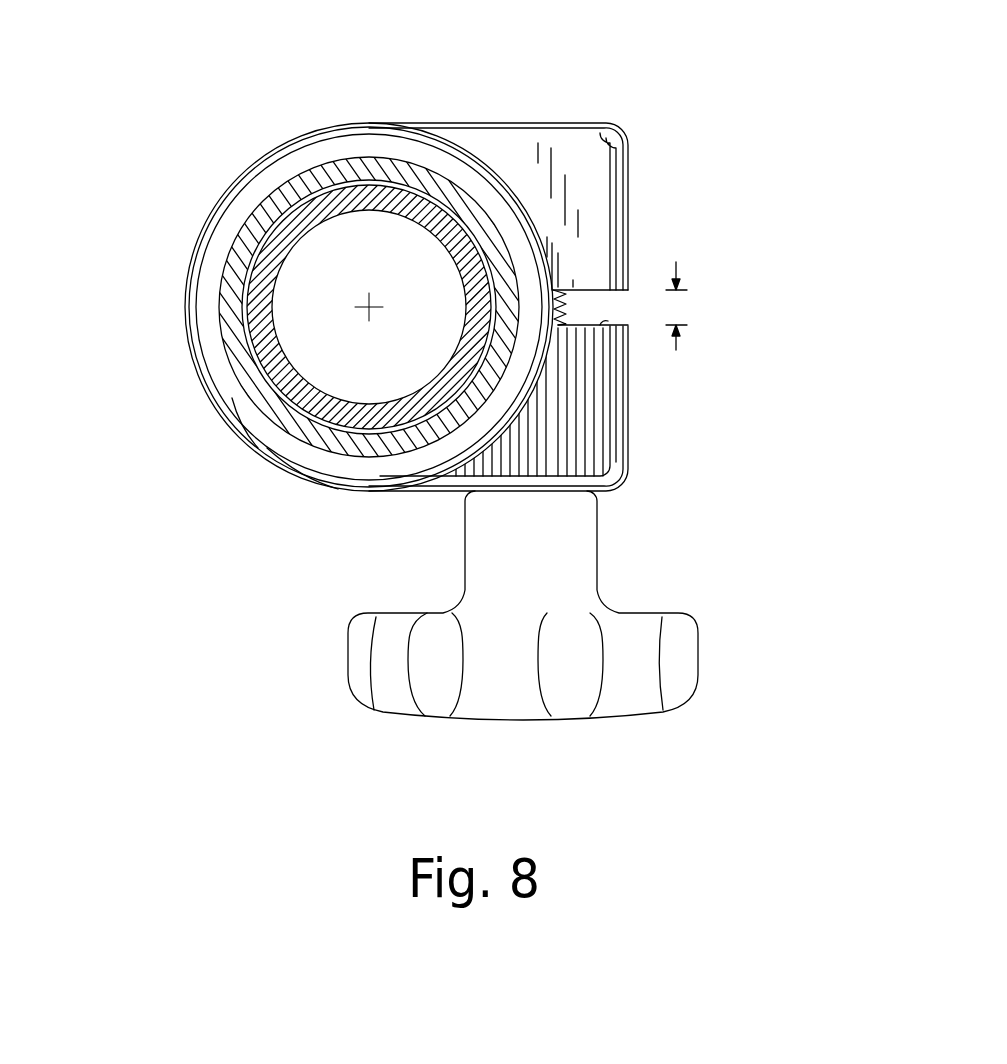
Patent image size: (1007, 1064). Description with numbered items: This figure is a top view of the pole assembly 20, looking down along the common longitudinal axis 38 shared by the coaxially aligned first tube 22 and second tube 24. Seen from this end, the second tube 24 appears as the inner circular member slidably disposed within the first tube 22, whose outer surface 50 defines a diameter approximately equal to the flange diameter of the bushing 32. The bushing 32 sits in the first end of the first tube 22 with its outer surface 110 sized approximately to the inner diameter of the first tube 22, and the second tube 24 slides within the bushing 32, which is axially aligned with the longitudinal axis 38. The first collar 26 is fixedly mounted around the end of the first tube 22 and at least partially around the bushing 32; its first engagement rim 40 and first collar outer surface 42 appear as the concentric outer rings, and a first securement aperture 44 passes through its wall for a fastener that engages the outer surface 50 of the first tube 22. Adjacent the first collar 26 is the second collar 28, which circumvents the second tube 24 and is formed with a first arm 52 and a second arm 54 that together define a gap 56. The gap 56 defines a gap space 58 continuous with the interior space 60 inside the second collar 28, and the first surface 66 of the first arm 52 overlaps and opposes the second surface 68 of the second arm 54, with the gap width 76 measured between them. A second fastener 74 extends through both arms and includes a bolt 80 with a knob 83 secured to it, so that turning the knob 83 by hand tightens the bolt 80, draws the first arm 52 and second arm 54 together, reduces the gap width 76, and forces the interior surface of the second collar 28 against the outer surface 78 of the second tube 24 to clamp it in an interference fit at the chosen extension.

The pole assembly 20 is at (565, 66).
The first tube 22 is at (308, 178).
The second tube 24 is at (358, 188).
The first collar 26 is at (232, 195).
The second collar 28 is at (445, 130).
The bushing 32 is at (388, 185).
The common longitudinal axis 38 is at (375, 318).
The first engagement rim 40 is at (262, 175).
The first collar outer surface 42 is at (513, 190).
The first securement aperture 44 is at (217, 373).
The outer surface of the first tube 50 is at (310, 442).
The first arm 52 is at (625, 455).
The second arm 54 is at (627, 251).
The gap 56 is at (600, 306).
The gap space 58 is at (612, 315).
The interior space 60 is at (358, 390).
The first surface 66 is at (606, 324).
The second surface 68 is at (600, 295).
The second fastener 74 is at (616, 744).
The gap width 76 is at (677, 347).
The outer surface of the second tube 78 is at (246, 300).
The bolt 80 is at (565, 292).
The knob 83 is at (488, 690).
The outer surface of the bushing 110 is at (278, 402).